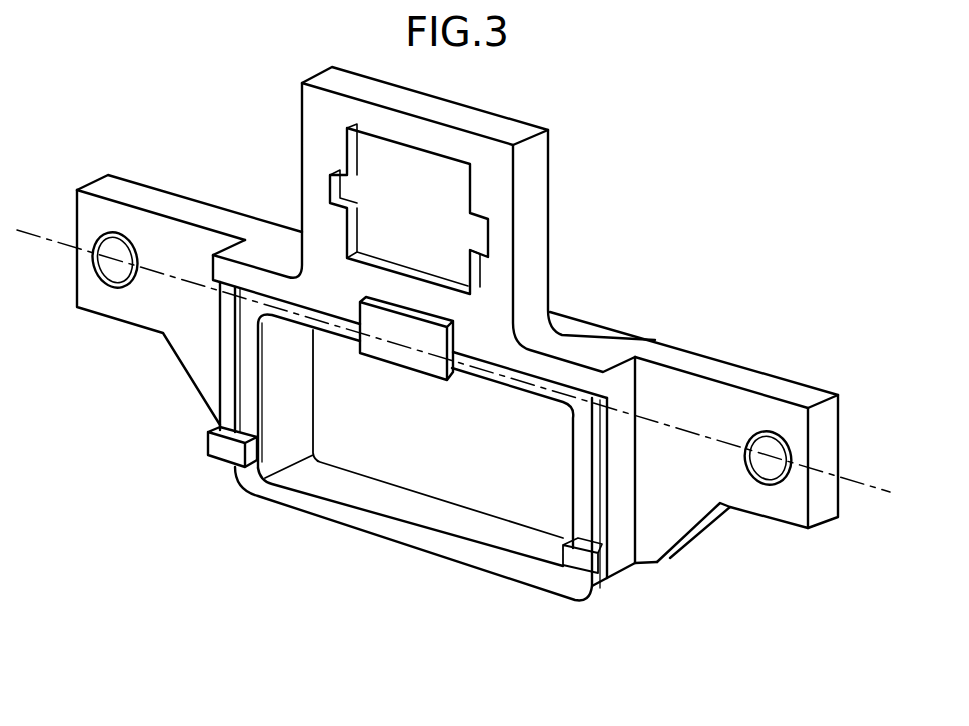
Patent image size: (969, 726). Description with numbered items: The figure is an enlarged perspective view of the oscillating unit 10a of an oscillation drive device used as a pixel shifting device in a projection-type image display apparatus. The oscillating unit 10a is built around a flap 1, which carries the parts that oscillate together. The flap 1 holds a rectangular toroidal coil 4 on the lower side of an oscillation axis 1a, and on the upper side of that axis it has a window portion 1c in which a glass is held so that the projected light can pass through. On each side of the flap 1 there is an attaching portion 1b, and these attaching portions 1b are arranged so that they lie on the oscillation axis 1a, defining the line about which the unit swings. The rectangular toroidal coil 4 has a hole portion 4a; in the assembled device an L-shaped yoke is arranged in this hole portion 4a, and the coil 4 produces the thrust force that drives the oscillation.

The oscillating unit 10a is at (205, 117).
The flap 1 is at (523, 290).
The oscillation axis 1a is at (45, 243).
The attaching portion 1b is at (117, 217).
The window portion 1c is at (423, 205).
The rectangular toroidal coil 4 is at (387, 530).
The hole portion 4a is at (507, 478).